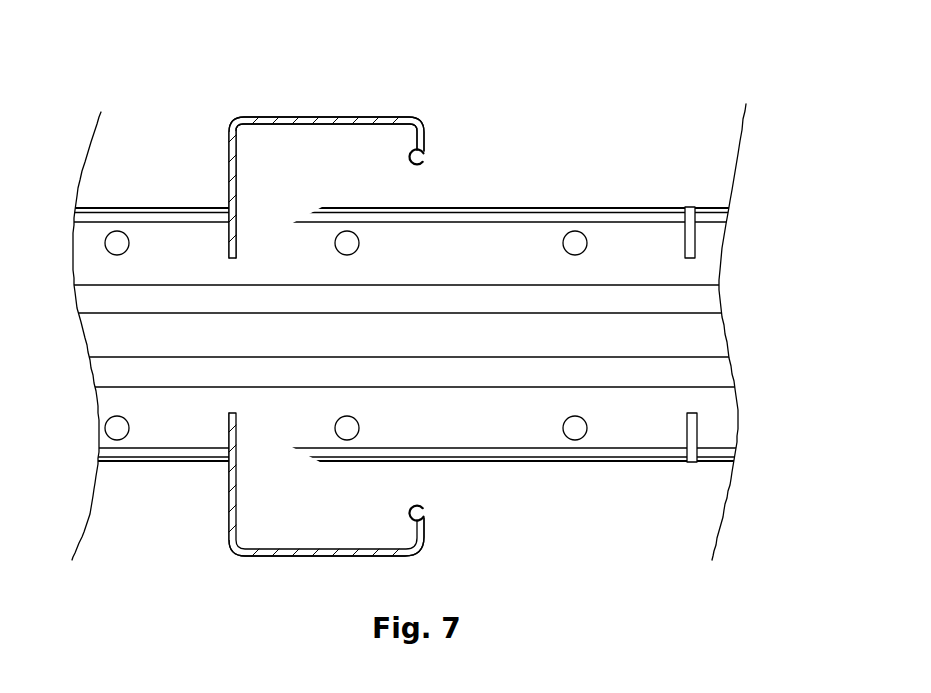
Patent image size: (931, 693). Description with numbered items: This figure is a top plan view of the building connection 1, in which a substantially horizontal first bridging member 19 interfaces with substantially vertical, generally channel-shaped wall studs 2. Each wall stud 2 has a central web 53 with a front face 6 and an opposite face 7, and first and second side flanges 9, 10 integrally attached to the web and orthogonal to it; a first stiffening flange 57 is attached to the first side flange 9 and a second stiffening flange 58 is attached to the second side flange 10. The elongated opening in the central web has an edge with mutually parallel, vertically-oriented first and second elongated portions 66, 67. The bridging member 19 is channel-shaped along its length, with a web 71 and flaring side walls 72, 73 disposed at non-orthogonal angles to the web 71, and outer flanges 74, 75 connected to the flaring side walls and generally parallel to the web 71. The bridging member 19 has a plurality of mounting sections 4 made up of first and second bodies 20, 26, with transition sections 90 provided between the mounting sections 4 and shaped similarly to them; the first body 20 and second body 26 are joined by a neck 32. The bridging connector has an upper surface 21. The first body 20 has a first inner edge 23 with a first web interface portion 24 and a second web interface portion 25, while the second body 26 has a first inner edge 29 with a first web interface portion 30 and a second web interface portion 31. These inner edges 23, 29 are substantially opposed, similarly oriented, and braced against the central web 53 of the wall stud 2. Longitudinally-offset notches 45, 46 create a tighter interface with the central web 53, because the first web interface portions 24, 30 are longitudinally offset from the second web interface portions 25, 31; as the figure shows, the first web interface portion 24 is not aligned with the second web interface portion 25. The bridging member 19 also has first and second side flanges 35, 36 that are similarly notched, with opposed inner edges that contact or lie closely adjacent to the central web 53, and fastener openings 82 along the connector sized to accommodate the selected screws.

The building connection 1 is at (472, 90).
The wall stud 2 is at (343, 115).
The mounting section 4 is at (251, 206).
The front face 6 is at (229, 150).
The opposite face 7 is at (236, 152).
The first side flange 9 is at (288, 117).
The second side flange 10 is at (297, 557).
The first bridging member 19 is at (596, 206).
The first body 20 is at (203, 244).
The upper surface 21 is at (700, 263).
The first inner edge 23 is at (226, 212).
The first web interface portion 24 is at (227, 232).
The second web interface portion 25 is at (229, 426).
The second body 26 is at (242, 233).
The first inner edge 29 is at (243, 216).
The first web interface portion 30 is at (240, 244).
The second web interface portion 31 is at (237, 427).
The neck 32 is at (688, 301).
The first side flange 35 is at (477, 210).
The second side flange 36 is at (615, 460).
The notch 45 is at (692, 215).
The notch 46 is at (690, 463).
The central web 53 is at (239, 503).
The first stiffening flange 57 is at (423, 162).
The second stiffening flange 58 is at (423, 508).
The first elongated portion 66 is at (232, 257).
The second elongated portion 67 is at (236, 413).
The web 71 is at (432, 325).
The flaring side wall 72 is at (422, 292).
The flaring side wall 73 is at (440, 372).
The outer flange 74 is at (528, 225).
The outer flange 75 is at (515, 435).
The fastener opening 82 is at (117, 243).
The transition section 90 is at (88, 230).